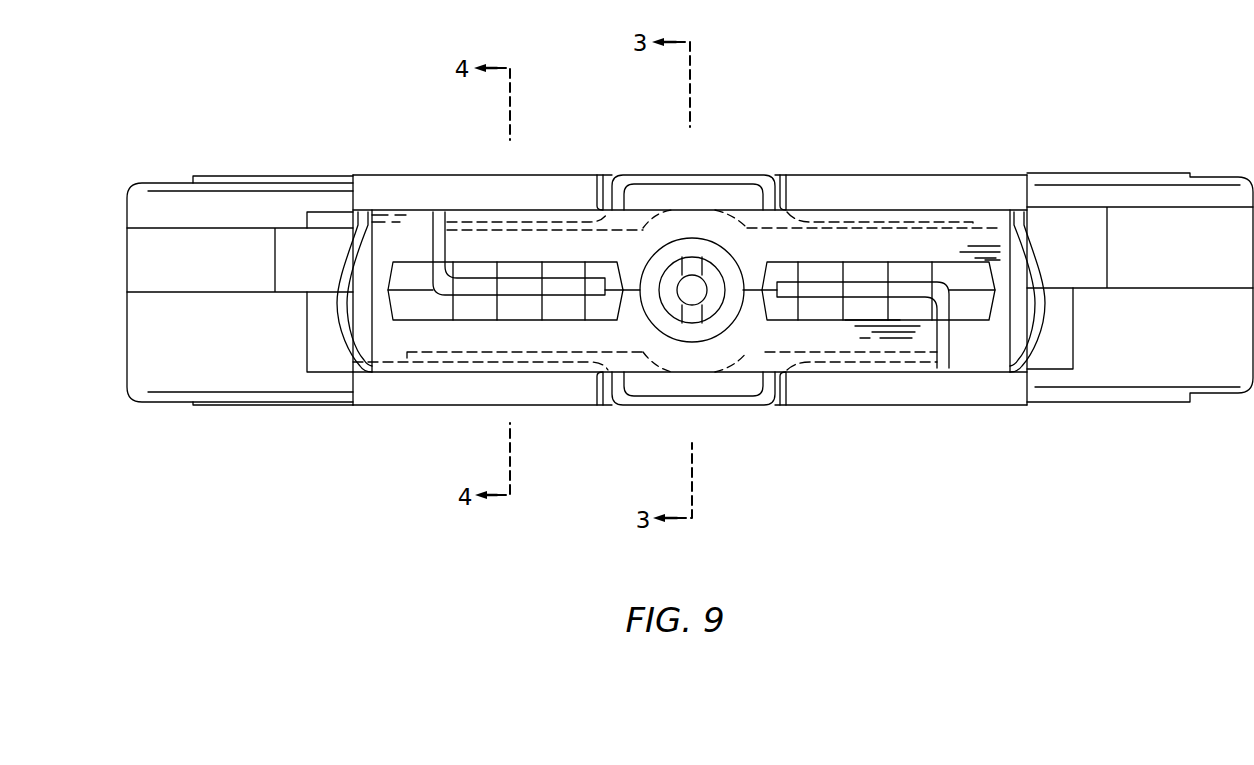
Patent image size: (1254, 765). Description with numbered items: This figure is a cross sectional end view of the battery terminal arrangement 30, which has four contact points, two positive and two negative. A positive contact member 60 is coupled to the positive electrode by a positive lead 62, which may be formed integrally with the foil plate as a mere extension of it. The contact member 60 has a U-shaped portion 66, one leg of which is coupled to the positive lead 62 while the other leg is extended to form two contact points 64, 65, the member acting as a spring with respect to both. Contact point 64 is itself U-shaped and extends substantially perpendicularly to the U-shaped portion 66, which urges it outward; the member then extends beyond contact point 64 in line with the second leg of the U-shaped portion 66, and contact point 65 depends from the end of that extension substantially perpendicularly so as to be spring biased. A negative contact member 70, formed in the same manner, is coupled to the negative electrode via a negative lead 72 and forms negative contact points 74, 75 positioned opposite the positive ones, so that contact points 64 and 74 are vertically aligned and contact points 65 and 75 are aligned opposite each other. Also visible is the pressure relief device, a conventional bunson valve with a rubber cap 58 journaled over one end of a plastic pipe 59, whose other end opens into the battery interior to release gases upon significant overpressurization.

The terminal arrangement 30 is at (898, 142).
The rubber cap 58 is at (690, 311).
The plastic pipe 59 is at (680, 310).
The positive contact member 60 is at (793, 212).
The positive lead 62 is at (478, 297).
The contact point 64 is at (668, 176).
The contact point 65 is at (1042, 255).
The U-shaped portion 66 is at (587, 210).
The negative contact member 70 is at (583, 364).
The negative lead 72 is at (912, 280).
The negative contact point 74 is at (730, 400).
The negative contact point 75 is at (343, 342).